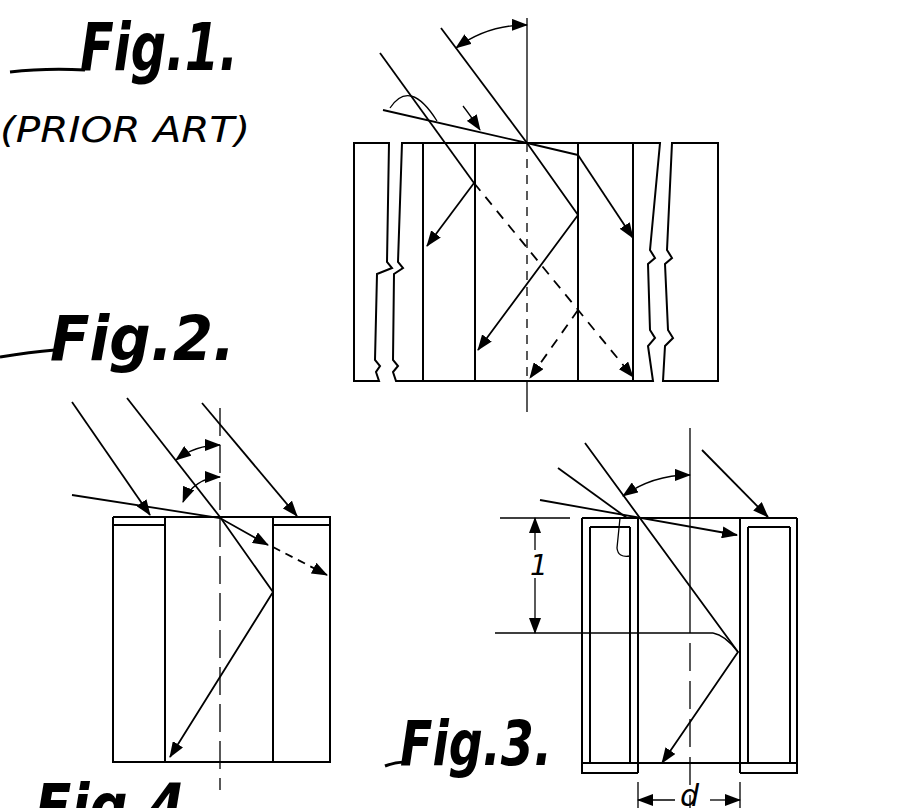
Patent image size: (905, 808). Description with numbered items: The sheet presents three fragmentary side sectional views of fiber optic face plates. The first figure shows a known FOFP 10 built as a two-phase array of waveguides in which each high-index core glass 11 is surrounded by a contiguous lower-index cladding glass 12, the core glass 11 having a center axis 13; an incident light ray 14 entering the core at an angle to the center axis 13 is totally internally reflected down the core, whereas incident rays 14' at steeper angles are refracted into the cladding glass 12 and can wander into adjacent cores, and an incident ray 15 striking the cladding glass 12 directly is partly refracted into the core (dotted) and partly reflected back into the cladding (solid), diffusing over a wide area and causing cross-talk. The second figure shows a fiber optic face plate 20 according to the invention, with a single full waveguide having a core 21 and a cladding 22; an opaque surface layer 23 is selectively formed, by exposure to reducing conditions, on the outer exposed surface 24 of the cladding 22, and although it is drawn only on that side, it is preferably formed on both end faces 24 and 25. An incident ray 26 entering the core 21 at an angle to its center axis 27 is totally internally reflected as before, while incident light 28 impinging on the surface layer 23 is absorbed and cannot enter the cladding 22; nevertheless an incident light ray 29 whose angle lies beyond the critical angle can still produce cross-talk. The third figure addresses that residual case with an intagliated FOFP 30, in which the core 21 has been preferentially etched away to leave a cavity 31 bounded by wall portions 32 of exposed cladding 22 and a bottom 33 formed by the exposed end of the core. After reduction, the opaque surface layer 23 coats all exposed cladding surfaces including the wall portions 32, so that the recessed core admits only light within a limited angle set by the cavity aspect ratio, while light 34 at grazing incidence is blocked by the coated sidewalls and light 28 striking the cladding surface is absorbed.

In FIG. 1, the FOFP 10 is at (543, 224).
In FIG. 1, the core glass 11 is at (412, 373).
In FIG. 1, the cladding glass 12 is at (608, 143).
In FIG. 1, the center axis 13 is at (531, 43).
In FIG. 1, the incident light ray 14 is at (484, 183).
In FIG. 1, the incident rays 14' is at (486, 215).
In FIG. 1, the incident ray 15 is at (383, 110).
In FIG. 2, the fiber optic face plate 20 is at (204, 608).
In FIG. 2, the core 21 is at (182, 640).
In FIG. 3, the core 21 is at (653, 660).
In FIG. 2, the cladding 22 is at (127, 603).
In FIG. 2, the opaque surface layer 23 is at (316, 517).
In FIG. 3, the opaque surface layer 23 is at (613, 513).
In FIG. 2, the outer exposed surface 24 is at (133, 523).
In FIG. 3, the outer exposed surface 24 is at (588, 530).
In FIG. 2, the end face 25 is at (128, 767).
In FIG. 3, the end face 25 is at (600, 763).
In FIG. 2, the incident ray 26 is at (148, 424).
In FIG. 2, the center axis 27 is at (220, 412).
In FIG. 3, the center axis 27 is at (688, 446).
In FIG. 2, the incident light 28 is at (95, 437).
In FIG. 3, the incident light 28 is at (728, 476).
In FIG. 2, the incident light ray 29 is at (75, 497).
In FIG. 3, the FOFP 30 is at (669, 595).
In FIG. 3, the cavity 31 is at (733, 577).
In FIG. 3, the wall portions 32 is at (797, 600).
In FIG. 3, the bottom 33 is at (593, 458).
In FIG. 3, the light 34 is at (712, 518).